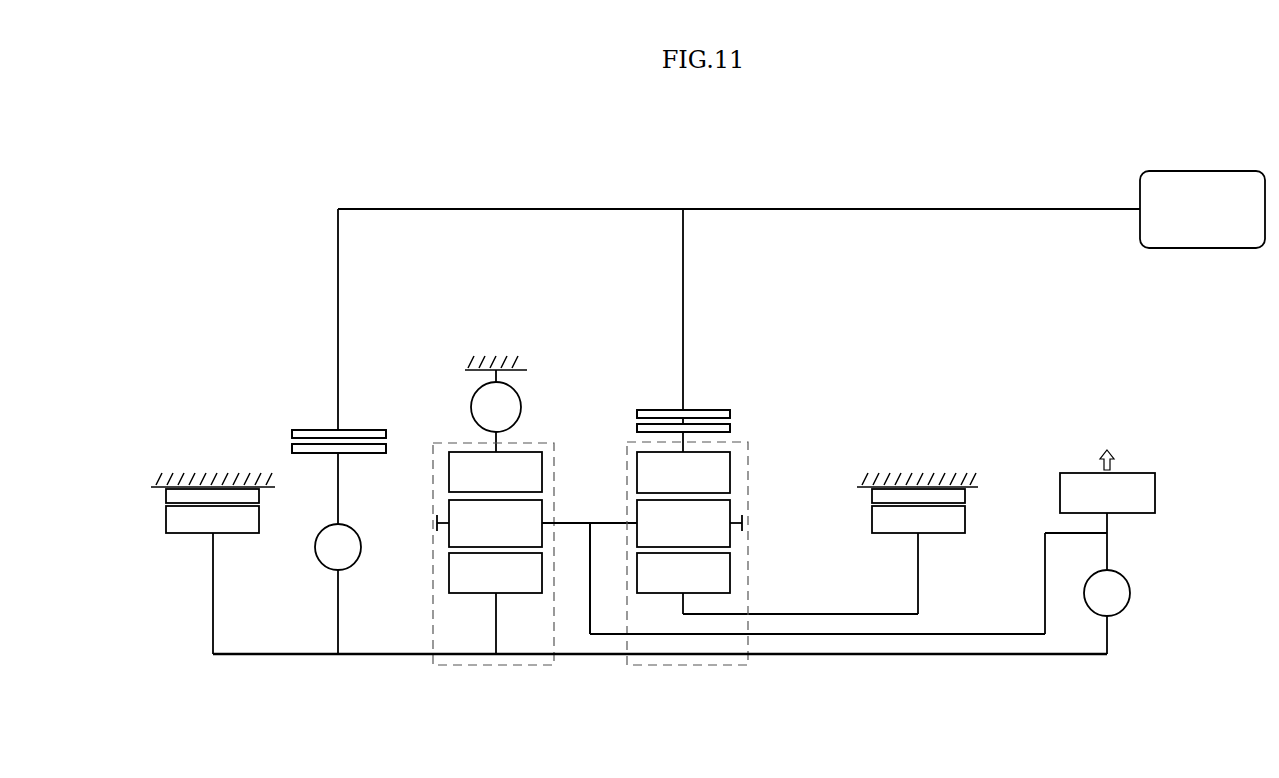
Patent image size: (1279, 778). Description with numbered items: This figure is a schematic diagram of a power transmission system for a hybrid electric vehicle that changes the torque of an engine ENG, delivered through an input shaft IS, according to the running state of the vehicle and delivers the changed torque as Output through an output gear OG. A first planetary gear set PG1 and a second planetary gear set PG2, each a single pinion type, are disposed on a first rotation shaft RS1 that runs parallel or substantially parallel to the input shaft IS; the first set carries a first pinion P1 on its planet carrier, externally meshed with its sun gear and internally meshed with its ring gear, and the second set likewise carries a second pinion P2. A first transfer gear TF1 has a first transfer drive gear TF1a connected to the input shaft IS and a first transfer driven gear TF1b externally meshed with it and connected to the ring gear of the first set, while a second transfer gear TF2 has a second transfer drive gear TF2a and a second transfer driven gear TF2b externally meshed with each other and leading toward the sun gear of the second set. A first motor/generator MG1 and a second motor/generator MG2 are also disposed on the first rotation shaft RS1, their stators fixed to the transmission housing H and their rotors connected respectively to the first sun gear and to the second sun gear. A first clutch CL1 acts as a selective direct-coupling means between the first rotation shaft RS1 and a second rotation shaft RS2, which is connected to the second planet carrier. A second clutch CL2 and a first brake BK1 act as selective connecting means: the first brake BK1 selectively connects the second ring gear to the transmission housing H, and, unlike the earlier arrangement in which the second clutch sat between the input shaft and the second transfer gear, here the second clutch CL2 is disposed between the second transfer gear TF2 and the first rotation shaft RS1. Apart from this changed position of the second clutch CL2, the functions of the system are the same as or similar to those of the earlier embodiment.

The input shaft IS is at (797, 209).
The engine ENG is at (1202, 209).
The second transfer gear TF2 is at (247, 357).
The second transfer drive gear TF2a is at (308, 430).
The second transfer driven gear TF2b is at (292, 448).
The first transfer gear TF1 is at (775, 334).
The first transfer drive gear TF1a is at (715, 410).
The first transfer driven gear TF1b is at (732, 428).
The transmission housing H is at (175, 487).
The second motor/generator MG2 is at (177, 540).
The second clutch CL2 is at (338, 547).
The first brake BK1 is at (496, 411).
The second planetary gear set PG2 is at (492, 668).
The second pinion P2 is at (489, 523).
The first planetary gear set PG1 is at (687, 668).
The first pinion P1 is at (689, 523).
The first motor/generator MG1 is at (864, 522).
The output Output is at (1107, 445).
The output gear OG is at (1107, 493).
The first clutch CL1 is at (1107, 593).
The first rotation shaft RS1 is at (847, 655).
The second rotation shaft RS2 is at (979, 635).